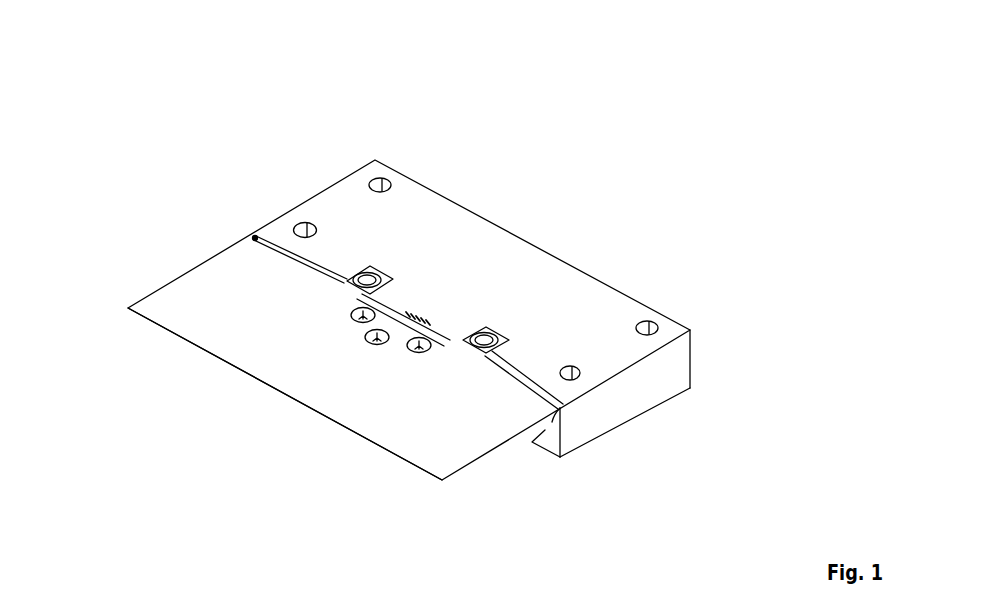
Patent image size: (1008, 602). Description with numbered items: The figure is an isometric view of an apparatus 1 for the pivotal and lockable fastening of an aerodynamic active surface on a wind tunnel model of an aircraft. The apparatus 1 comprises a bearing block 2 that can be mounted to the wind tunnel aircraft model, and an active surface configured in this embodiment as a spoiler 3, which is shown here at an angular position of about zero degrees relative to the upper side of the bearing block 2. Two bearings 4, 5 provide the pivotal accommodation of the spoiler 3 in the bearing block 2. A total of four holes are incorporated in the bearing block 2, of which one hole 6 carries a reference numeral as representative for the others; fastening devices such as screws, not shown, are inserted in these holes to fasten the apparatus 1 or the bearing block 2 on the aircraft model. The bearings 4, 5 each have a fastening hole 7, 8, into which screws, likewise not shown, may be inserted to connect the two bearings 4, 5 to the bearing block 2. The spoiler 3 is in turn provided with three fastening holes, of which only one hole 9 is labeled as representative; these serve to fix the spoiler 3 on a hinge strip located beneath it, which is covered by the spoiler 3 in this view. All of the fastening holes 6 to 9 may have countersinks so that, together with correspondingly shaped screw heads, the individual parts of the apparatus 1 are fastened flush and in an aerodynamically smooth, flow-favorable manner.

The apparatus 1 is at (509, 60).
The bearing block 2 is at (565, 278).
The spoiler 3 is at (187, 308).
The bearing 4 is at (345, 278).
The bearing 5 is at (508, 340).
The hole 6 is at (643, 325).
The fastening hole 7 is at (360, 278).
The fastening hole 8 is at (484, 341).
The hole 9 is at (370, 340).